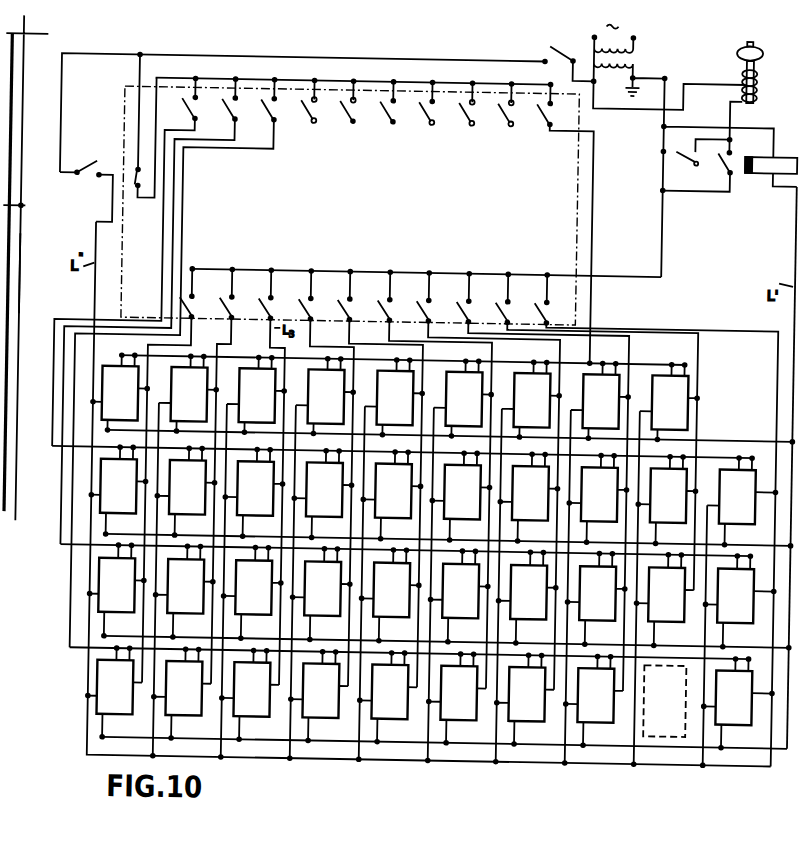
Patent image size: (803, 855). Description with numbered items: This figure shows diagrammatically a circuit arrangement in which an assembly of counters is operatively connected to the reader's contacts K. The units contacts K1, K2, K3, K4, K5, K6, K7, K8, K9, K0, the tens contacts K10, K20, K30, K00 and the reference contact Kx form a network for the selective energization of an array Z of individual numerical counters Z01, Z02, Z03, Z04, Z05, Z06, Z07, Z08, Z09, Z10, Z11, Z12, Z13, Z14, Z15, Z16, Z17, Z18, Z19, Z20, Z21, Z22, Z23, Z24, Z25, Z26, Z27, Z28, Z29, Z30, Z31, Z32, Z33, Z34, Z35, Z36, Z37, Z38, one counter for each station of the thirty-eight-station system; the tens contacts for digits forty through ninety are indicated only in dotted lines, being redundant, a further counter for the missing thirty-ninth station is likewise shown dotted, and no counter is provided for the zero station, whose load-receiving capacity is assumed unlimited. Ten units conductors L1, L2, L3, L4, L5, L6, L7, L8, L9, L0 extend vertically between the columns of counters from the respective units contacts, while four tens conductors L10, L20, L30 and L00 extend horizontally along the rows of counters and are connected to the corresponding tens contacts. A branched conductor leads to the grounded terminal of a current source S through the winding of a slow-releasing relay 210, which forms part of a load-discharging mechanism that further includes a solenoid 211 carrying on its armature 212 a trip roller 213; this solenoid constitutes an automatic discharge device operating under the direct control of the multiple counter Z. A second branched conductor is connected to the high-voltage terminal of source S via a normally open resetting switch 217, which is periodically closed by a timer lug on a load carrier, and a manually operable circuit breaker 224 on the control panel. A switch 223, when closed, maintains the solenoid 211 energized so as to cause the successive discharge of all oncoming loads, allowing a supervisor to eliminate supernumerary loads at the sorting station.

The slow-releasing relay 210 is at (775, 148).
The solenoid 211 is at (752, 85).
The armature 212 is at (752, 65).
The trip roller 213 is at (758, 48).
The resetting switch 217 is at (90, 178).
The switch 223 is at (690, 160).
The circuit breaker 224 is at (556, 53).
The current source S is at (629, 56).
The contacts K is at (574, 167).
The reference contact Kx is at (145, 134).
The tens contact K10 is at (137, 262).
The tens contact K20 is at (161, 311).
The tens contact K30 is at (186, 363).
The tens contact K00 is at (564, 223).
The units contact K1 is at (179, 476).
The units contact K2 is at (233, 476).
The units contact K3 is at (273, 477).
The units contact K4 is at (323, 478).
The units contact K5 is at (377, 479).
The units contact K6 is at (432, 480).
The units contact K7 is at (485, 481).
The units contact K8 is at (540, 481).
The units contact K9 is at (595, 432).
The units contact K0 is at (653, 521).
The units conductor L1 is at (194, 330).
The units conductor L2 is at (234, 330).
The units conductor L3 is at (23, 275).
The units conductor L4 is at (313, 330).
The units conductor L5 is at (352, 330).
The units conductor L6 is at (392, 330).
The units conductor L7 is at (431, 330).
The units conductor L8 is at (471, 330).
The units conductor L9 is at (649, 331).
The units conductor L0 is at (749, 326).
The tens conductor L00 is at (139, 356).
The tens conductor L10 is at (53, 458).
The tens conductor L20 is at (62, 546).
The tens conductor L30 is at (82, 654).
The array of counters Z is at (396, 553).
The numerical counter Z01 is at (119, 393).
The numerical counter Z02 is at (187, 394).
The numerical counter Z03 is at (255, 395).
The numerical counter Z04 is at (324, 396).
The numerical counter Z05 is at (393, 397).
The numerical counter Z06 is at (462, 399).
The numerical counter Z07 is at (530, 400).
The numerical counter Z08 is at (599, 401).
The numerical counter Z09 is at (668, 402).
The numerical counter Z10 is at (742, 501).
The numerical counter Z11 is at (119, 491).
The numerical counter Z12 is at (186, 492).
The numerical counter Z13 is at (254, 493).
The numerical counter Z14 is at (323, 494).
The numerical counter Z15 is at (392, 495).
The numerical counter Z16 is at (461, 497).
The numerical counter Z17 is at (529, 498).
The numerical counter Z18 is at (598, 499).
The numerical counter Z19 is at (667, 500).
The numerical counter Z20 is at (740, 601).
The numerical counter Z21 is at (117, 591).
The numerical counter Z22 is at (184, 592).
The numerical counter Z23 is at (252, 593).
The numerical counter Z24 is at (321, 594).
The numerical counter Z25 is at (390, 595).
The numerical counter Z26 is at (459, 597).
The numerical counter Z27 is at (527, 598).
The numerical counter Z28 is at (596, 599).
The numerical counter Z29 is at (665, 600).
The numerical counter Z30 is at (738, 703).
The numerical counter Z31 is at (115, 693).
The numerical counter Z32 is at (182, 694).
The numerical counter Z33 is at (250, 695).
The numerical counter Z34 is at (319, 696).
The numerical counter Z35 is at (388, 697).
The numerical counter Z36 is at (457, 699).
The numerical counter Z37 is at (525, 700).
The numerical counter Z38 is at (594, 701).